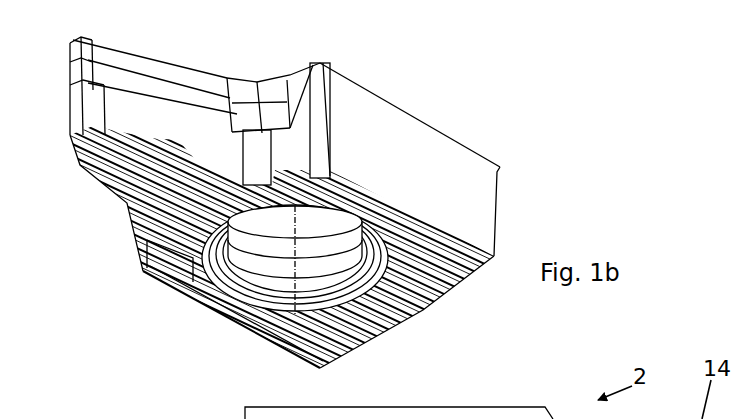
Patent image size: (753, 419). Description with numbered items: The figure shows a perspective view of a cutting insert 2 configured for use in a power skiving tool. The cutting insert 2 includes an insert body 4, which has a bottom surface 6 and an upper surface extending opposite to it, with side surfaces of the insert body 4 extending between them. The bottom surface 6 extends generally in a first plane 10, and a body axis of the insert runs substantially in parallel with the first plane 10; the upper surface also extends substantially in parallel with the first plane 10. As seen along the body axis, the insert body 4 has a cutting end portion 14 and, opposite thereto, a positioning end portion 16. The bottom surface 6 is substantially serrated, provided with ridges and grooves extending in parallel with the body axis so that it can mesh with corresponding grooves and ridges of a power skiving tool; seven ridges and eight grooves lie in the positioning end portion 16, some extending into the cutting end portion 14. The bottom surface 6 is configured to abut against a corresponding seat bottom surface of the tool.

The cutting insert 2 is at (454, 87).
The insert body 4 is at (448, 155).
The bottom surface 6 is at (176, 291).
The first plane 10 is at (278, 92).
The cutting end portion 14 is at (172, 42).
The positioning end portion 16 is at (229, 341).